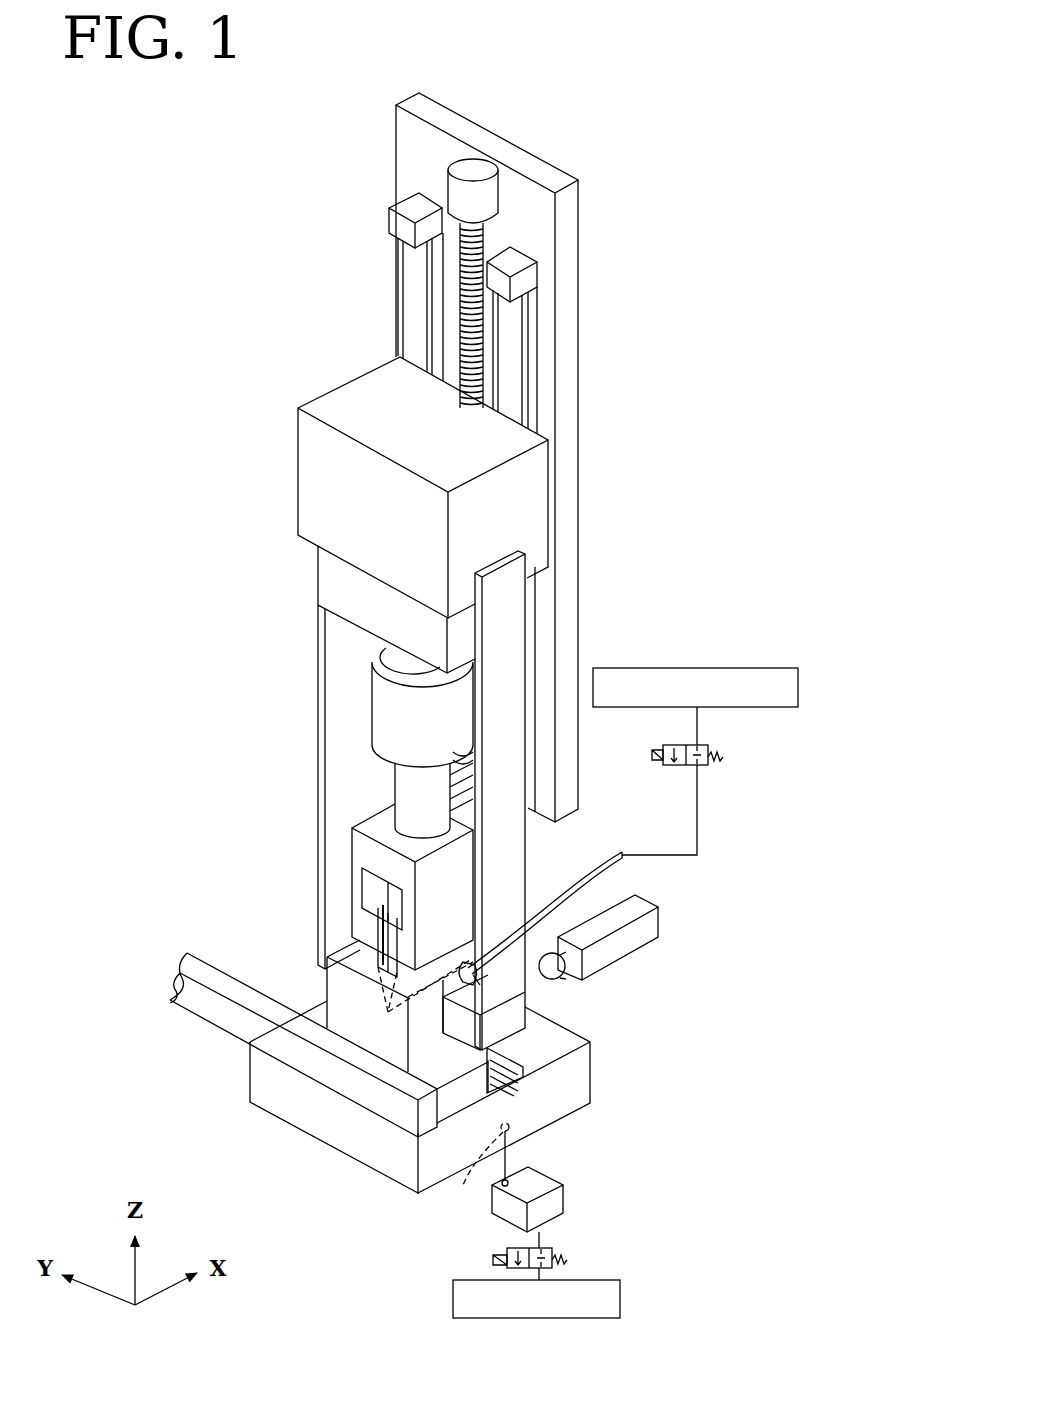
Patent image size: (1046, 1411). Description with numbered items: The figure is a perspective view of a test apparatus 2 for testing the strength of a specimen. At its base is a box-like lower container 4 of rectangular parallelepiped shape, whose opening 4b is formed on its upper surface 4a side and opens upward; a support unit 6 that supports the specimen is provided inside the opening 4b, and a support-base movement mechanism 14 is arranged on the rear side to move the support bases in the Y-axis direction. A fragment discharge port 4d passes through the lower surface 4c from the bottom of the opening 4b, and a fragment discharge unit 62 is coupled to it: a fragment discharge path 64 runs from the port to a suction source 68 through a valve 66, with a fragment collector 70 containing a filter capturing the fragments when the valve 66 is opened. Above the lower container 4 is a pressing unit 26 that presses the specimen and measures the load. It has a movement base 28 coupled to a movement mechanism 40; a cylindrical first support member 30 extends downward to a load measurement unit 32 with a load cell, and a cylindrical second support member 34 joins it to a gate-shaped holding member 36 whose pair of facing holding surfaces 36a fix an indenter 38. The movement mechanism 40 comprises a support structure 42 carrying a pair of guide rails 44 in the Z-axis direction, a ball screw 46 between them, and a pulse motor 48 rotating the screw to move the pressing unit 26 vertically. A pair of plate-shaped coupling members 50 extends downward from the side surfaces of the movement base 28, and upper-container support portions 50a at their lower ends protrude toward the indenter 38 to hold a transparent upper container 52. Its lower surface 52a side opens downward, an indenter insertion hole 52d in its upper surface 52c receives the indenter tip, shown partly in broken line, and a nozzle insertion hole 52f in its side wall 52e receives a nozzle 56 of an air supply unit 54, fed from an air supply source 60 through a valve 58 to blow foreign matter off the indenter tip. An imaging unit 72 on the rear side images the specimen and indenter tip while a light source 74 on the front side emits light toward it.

The test apparatus 2 is at (180, 265).
The lower container 4 is at (600, 1077).
The upper surface 4a is at (575, 1045).
The opening 4b is at (522, 1080).
The lower surface 4c is at (545, 1122).
The fragment discharge port 4d is at (476, 1172).
The support unit 6 is at (458, 1100).
The support-base movement mechanism 14 is at (520, 1055).
The pressing unit 26 is at (345, 378).
The movement base 28 is at (323, 462).
The first support member 30 is at (372, 653).
The load measurement unit 32 is at (385, 710).
The second support member 34 is at (410, 800).
The holding member 36 is at (370, 832).
The holding surfaces 36a is at (365, 880).
The indenter 38 is at (380, 915).
The movement mechanism 40 is at (642, 188).
The support structure 42 is at (571, 275).
The guide rails 44 is at (402, 212).
The ball screw 46 is at (468, 273).
The pulse motor 48 is at (471, 170).
The coupling members 50 is at (510, 603).
The upper-container support portions 50a is at (318, 955).
The upper container 52 is at (323, 1043).
The lower surface 52a is at (250, 1040).
The upper surface 52c is at (330, 957).
The indenter insertion hole 52d is at (458, 935).
The side wall 52e is at (368, 1025).
The nozzle insertion hole 52f is at (500, 980).
The air supply unit 54 is at (783, 730).
The nozzle 56 is at (585, 870).
The valve 58 is at (712, 756).
The air supply source 60 is at (696, 667).
The fragment discharge unit 62 is at (473, 1257).
The fragment discharge path 64 is at (508, 1157).
The valve 66 is at (566, 1258).
The suction source 68 is at (620, 1303).
The fragment collector 70 is at (557, 1196).
The imaging unit 72 is at (635, 920).
The light source 74 is at (205, 1010).